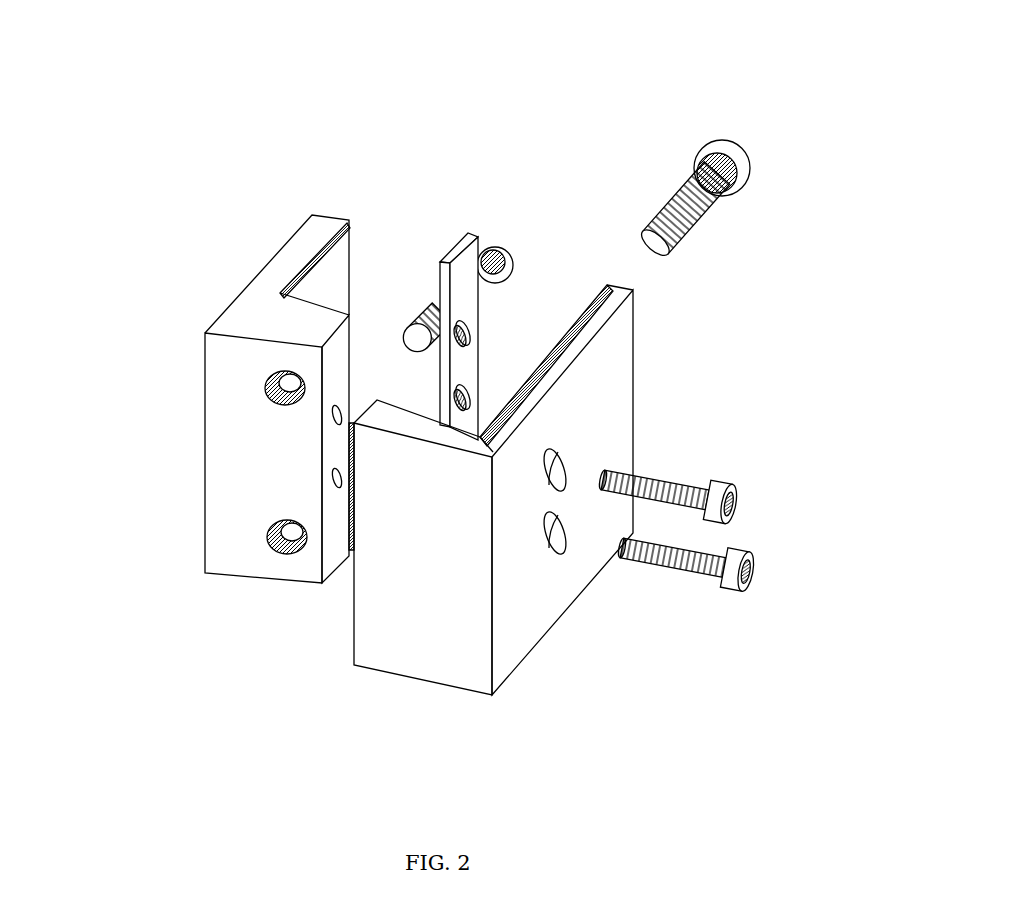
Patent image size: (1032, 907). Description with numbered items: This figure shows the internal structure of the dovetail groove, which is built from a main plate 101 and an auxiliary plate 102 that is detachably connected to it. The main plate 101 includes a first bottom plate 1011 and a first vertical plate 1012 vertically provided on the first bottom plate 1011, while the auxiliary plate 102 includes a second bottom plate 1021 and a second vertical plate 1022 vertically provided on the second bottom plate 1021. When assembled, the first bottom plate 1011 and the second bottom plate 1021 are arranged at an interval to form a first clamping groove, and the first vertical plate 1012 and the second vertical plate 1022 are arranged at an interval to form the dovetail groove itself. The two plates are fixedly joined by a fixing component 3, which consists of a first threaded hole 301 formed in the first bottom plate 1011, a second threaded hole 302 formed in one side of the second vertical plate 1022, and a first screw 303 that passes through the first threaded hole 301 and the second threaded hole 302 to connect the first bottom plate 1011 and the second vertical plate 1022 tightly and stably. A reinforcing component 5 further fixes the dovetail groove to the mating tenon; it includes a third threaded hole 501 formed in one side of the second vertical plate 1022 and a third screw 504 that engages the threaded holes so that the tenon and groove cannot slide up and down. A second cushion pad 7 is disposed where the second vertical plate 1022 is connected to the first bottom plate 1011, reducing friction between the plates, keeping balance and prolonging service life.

The main plate 101 is at (583, 509).
The first bottom plate 1011 is at (561, 501).
The first vertical plate 1012 is at (465, 590).
The auxiliary plate 102 is at (251, 405).
The second bottom plate 1021 is at (326, 178).
The second vertical plate 1022 is at (188, 524).
The fixing component 3 is at (740, 449).
The first threaded hole 301 is at (621, 552).
The second threaded hole 302 is at (228, 370).
The first screw 303 is at (752, 577).
The reinforcing component 5 is at (511, 241).
The third threaded hole 501 is at (343, 653).
The third screw 504 is at (733, 131).
The second cushion pad 7 is at (518, 244).